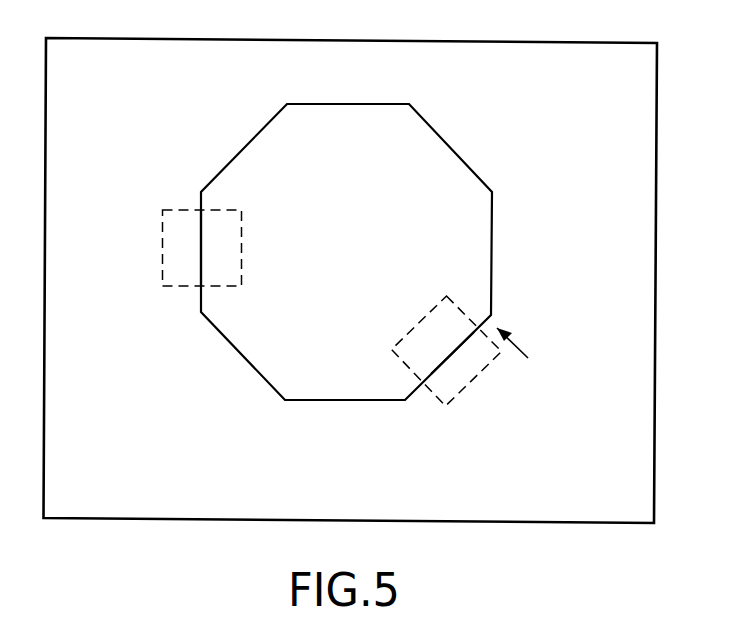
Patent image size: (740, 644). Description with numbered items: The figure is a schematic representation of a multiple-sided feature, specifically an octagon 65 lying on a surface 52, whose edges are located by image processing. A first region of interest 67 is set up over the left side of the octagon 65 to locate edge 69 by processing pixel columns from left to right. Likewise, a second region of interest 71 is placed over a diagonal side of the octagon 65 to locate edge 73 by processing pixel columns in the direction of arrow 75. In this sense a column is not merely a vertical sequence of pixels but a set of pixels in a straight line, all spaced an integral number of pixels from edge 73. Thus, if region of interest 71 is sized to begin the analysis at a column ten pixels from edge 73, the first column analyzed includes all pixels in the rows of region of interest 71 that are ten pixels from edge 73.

The surface 52 is at (638, 118).
The octagon 65 is at (507, 125).
The region of interest 67 is at (178, 286).
The edge 69 is at (201, 237).
The region of interest 71 is at (448, 405).
The edge 73 is at (432, 371).
The arrow 75 is at (522, 349).